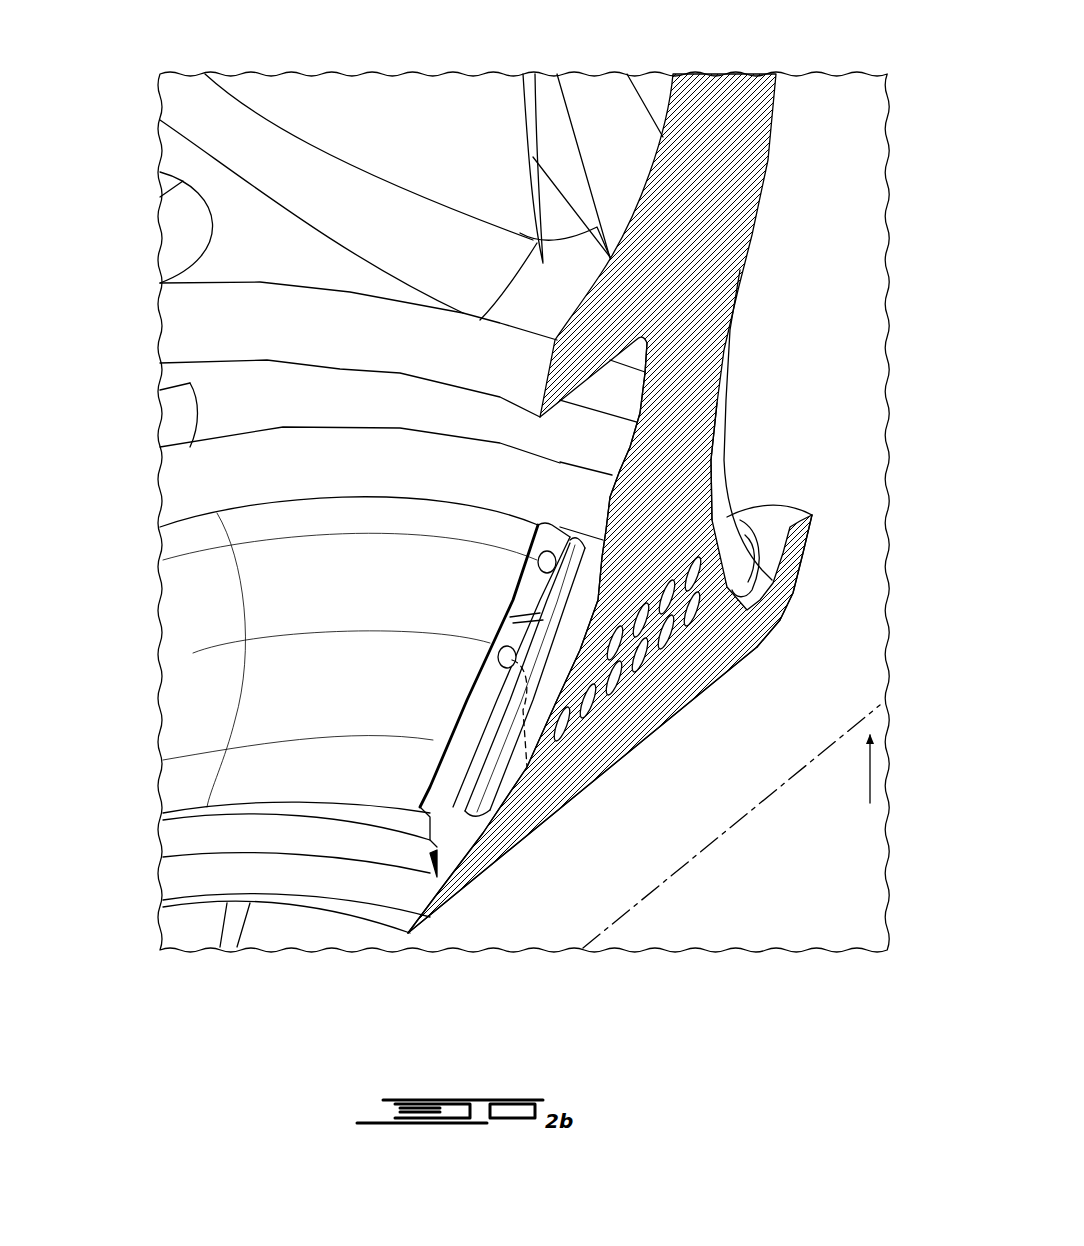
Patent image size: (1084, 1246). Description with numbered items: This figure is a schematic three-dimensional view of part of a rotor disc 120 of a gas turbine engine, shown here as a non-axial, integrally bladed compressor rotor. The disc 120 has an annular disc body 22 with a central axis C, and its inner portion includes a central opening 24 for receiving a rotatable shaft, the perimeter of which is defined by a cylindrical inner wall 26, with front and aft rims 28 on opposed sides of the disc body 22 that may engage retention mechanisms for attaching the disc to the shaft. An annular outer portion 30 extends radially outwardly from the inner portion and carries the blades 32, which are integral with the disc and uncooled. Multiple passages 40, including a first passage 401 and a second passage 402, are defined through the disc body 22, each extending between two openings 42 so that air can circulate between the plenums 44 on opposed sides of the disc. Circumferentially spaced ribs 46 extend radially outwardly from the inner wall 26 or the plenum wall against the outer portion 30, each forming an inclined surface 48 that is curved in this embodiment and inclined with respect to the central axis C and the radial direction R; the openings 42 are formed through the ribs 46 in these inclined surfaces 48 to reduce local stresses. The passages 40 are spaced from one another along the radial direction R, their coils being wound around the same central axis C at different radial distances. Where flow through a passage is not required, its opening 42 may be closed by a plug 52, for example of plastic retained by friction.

The rotor disc 120 is at (147, 158).
The blades 32 is at (520, 110).
The annular outer portion 30 is at (693, 300).
The plenum 44 is at (787, 375).
The inclined surface 48 is at (720, 447).
The ribs 46 is at (727, 467).
The annular disc body 22 is at (502, 503).
The rims 28 is at (797, 540).
The passages 40 is at (686, 694).
The cylindrical inner wall 26 is at (690, 687).
The second passage 402 is at (610, 660).
The first passage 401 is at (567, 727).
The plug 52 is at (527, 767).
The openings 42 is at (538, 562).
The central opening 24 is at (293, 930).
The radial direction R is at (868, 783).
The central axis C is at (660, 887).